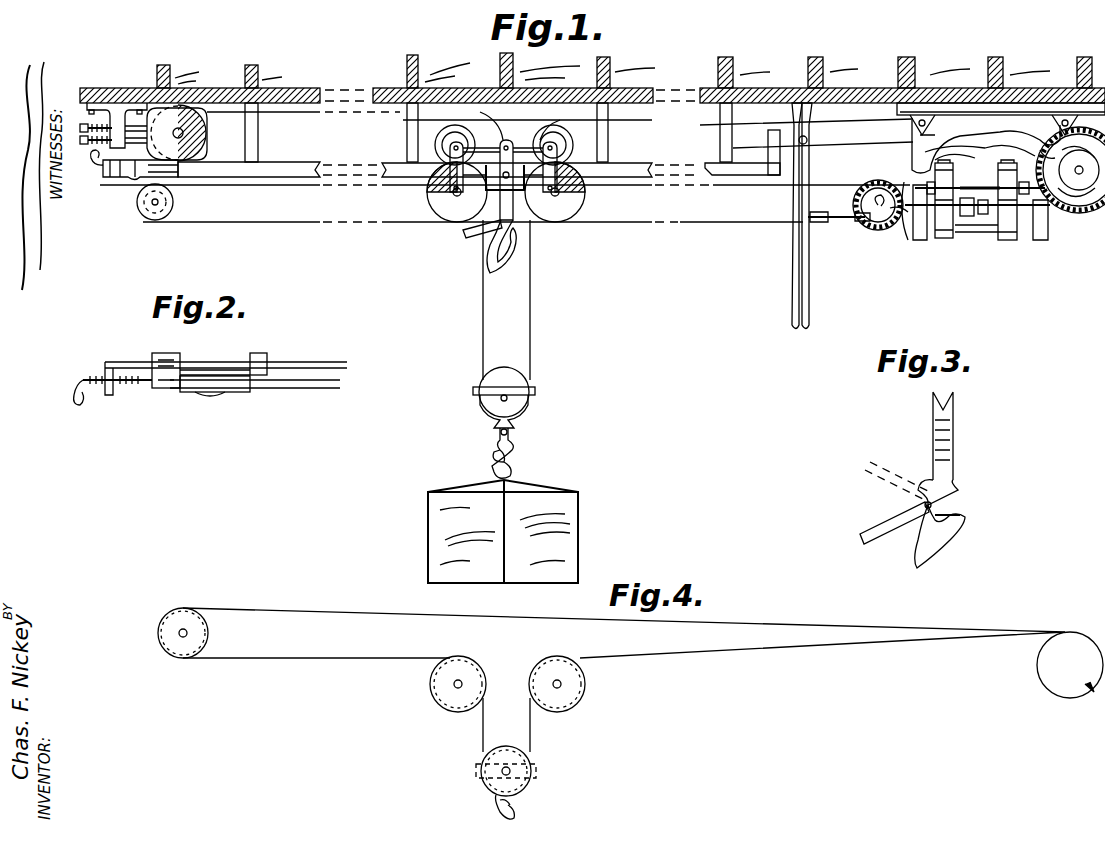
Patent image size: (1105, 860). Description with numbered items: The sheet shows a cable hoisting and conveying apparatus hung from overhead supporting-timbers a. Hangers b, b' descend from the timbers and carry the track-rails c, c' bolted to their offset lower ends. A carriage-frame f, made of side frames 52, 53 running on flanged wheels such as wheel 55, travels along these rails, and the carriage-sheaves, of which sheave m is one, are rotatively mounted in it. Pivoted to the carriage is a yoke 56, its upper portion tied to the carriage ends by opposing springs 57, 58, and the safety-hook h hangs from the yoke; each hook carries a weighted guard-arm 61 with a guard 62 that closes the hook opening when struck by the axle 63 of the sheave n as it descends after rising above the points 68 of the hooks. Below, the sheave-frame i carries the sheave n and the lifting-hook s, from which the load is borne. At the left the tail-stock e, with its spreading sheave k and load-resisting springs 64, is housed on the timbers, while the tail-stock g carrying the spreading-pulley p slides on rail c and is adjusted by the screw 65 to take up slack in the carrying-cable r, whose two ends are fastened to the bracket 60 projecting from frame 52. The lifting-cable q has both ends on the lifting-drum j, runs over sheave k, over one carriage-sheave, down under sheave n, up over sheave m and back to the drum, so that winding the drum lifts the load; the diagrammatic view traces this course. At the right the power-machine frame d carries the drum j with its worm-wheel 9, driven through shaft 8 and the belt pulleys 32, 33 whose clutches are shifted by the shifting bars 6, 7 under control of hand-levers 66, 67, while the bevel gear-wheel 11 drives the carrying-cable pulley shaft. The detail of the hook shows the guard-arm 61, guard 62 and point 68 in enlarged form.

In FIG. 1, the supporting-timbers a is at (292, 90).
In FIG. 1, the hanger b is at (265, 132).
In FIG. 1, the hanger b' is at (523, 132).
In FIG. 1, the track-rail c is at (479, 188).
In FIG. 2, the track-rail c is at (226, 350).
In FIG. 1, the track-rail c' is at (581, 173).
In FIG. 1, the carrying-cable r is at (272, 188).
In FIG. 2, the carrying-cable r is at (324, 383).
In FIG. 1, the lifting-cable q is at (306, 113).
In FIG. 4, the lifting-cable q is at (305, 608).
In FIG. 1, the tail-stock e is at (152, 103).
In FIG. 1, the spreading pulley or sheave k is at (207, 134).
In FIG. 4, the spreading pulley or sheave k is at (210, 634).
In FIG. 1, the tail-stock for the carrying-cable g is at (140, 180).
In FIG. 2, the tail-stock for the carrying-cable g is at (166, 353).
In FIG. 1, the spreading-pulley for the carrying-cable p is at (150, 220).
In FIG. 2, the spreading-pulley for the carrying-cable p is at (236, 393).
In FIG. 1, the carriage-frame f is at (440, 172).
In FIG. 1, the sheave-frame for the lifting-hook i is at (436, 210).
In FIG. 4, the sheave-frame for the lifting-hook i is at (430, 686).
In FIG. 1, the carriage-sheave m is at (562, 218).
In FIG. 4, the carriage-sheave m is at (588, 688).
In FIG. 1, the sheave n is at (503, 370).
In FIG. 4, the sheave n is at (506, 746).
In FIG. 1, the safety-hook h is at (490, 265).
In FIG. 3, the safety-hook h is at (955, 552).
In FIG. 1, the lifting-hook s is at (515, 458).
In FIG. 1, the frame d is at (915, 156).
In FIG. 4, the lifting-drum j is at (1037, 666).
In FIG. 1, the shifting bar 6 is at (908, 240).
In FIG. 1, the shifting bar 7 is at (842, 225).
In FIG. 1, the shaft 8 is at (971, 186).
In FIG. 1, the worm-wheel 9 is at (1076, 215).
In FIG. 1, the bevel gear-wheel 11 is at (880, 230).
In FIG. 1, the pulley 32 is at (1020, 240).
In FIG. 1, the pulley 33 is at (948, 240).
In FIG. 1, the carriage frame 52 is at (540, 225).
In FIG. 1, the carriage frame 53 is at (582, 200).
In FIG. 1, the flanged wheel 55 is at (470, 145).
In FIG. 1, the yoke 56 is at (515, 145).
In FIG. 3, the yoke 56 is at (955, 401).
In FIG. 1, the spring 57 is at (485, 112).
In FIG. 1, the spring 58 is at (560, 120).
In FIG. 1, the bracket 60 is at (490, 185).
In FIG. 1, the weighted guard-arm 61 is at (470, 238).
In FIG. 3, the weighted guard-arm 61 is at (905, 528).
In FIG. 3, the guard 62 is at (952, 490).
In FIG. 1, the axle 63 is at (536, 408).
In FIG. 1, the spring 64 is at (92, 135).
In FIG. 1, the adjusting and retaining screw 65 is at (95, 166).
In FIG. 2, the adjusting and retaining screw 65 is at (133, 384).
In FIG. 1, the hand-lever 66 is at (792, 284).
In FIG. 1, the hand-lever 67 is at (812, 272).
In FIG. 3, the point 68 is at (962, 518).